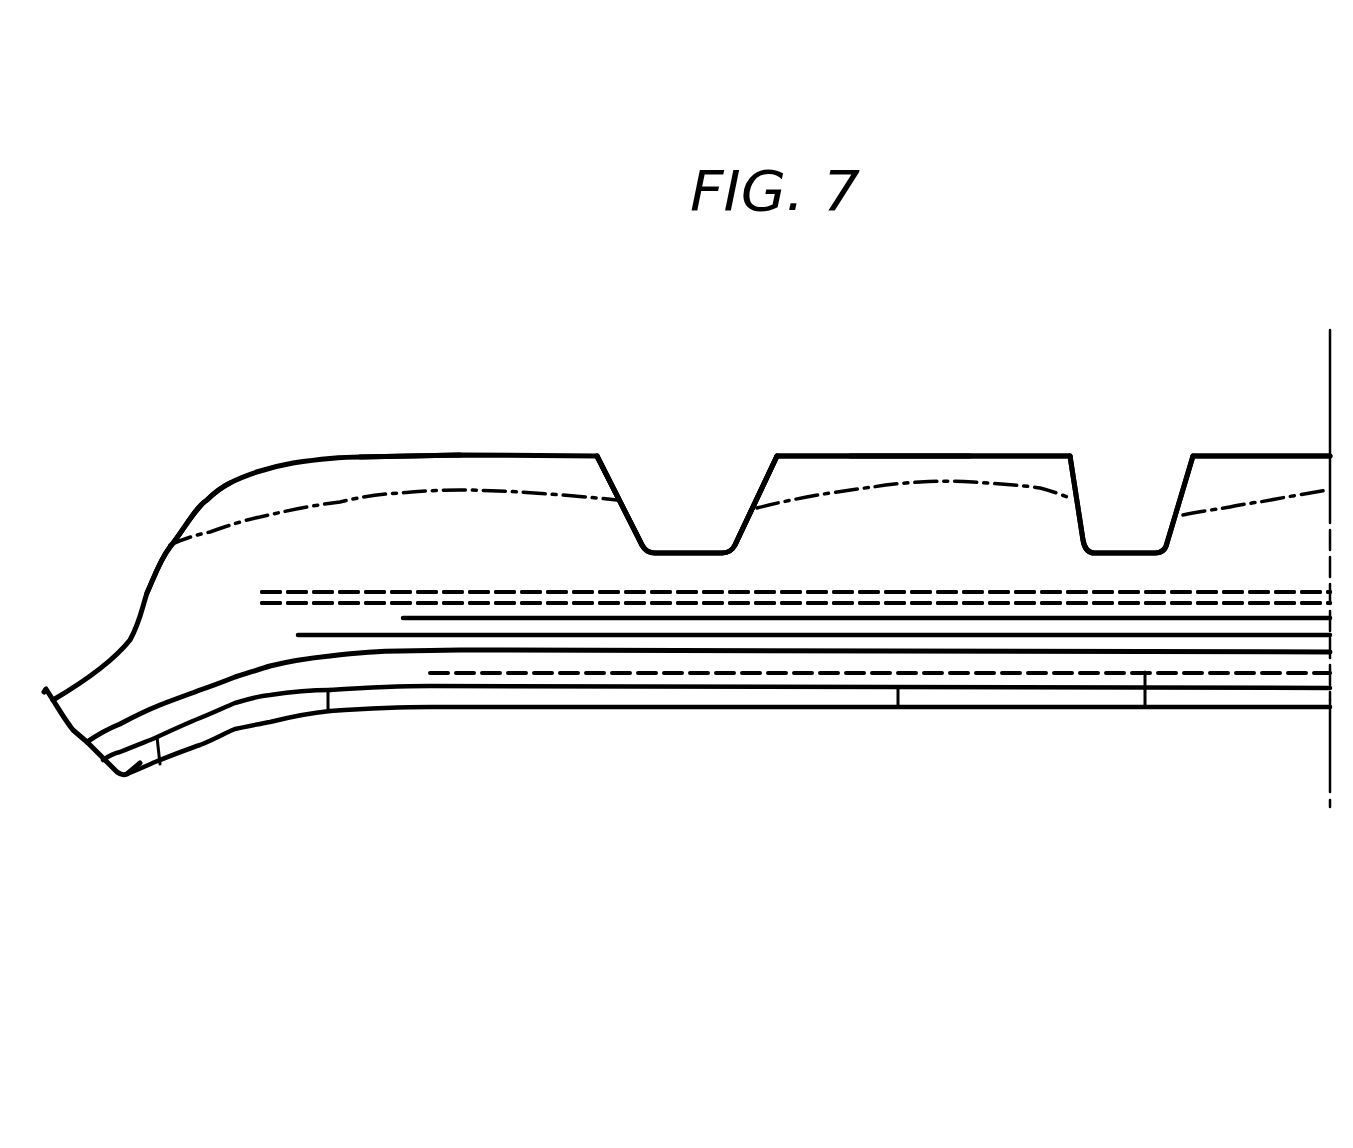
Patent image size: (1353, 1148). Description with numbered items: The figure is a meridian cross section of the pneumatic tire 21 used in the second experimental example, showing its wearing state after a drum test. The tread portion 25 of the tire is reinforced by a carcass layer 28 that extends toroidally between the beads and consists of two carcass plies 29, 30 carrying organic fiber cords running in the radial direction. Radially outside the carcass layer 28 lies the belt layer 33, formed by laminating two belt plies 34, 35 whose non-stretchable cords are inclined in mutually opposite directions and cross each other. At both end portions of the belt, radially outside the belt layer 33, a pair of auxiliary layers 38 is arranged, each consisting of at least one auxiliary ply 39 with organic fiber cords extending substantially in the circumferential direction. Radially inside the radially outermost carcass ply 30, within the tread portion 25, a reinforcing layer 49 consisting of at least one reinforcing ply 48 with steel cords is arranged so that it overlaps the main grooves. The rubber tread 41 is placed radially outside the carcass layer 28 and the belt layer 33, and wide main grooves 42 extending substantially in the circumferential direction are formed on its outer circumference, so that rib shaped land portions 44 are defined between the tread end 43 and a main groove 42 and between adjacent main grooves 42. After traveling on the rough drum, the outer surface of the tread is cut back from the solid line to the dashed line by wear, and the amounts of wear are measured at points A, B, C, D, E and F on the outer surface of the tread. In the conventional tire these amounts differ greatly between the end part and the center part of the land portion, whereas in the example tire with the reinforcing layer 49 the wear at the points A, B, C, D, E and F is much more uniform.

The pneumatic tire 21 is at (1090, 398).
The tread portion 25 is at (968, 448).
The carcass layer 28 is at (160, 765).
The carcass ply 29 is at (330, 710).
The carcass ply 30 is at (233, 677).
The belt layer 33 is at (522, 606).
The belt ply 34 is at (585, 635).
The belt ply 35 is at (1210, 617).
The auxiliary layer 38 is at (816, 582).
The auxiliary ply 39 is at (917, 594).
The tread 41 is at (495, 523).
The main groove 42 is at (630, 527).
The tread end 43 is at (212, 486).
The land portion 44 is at (833, 507).
The reinforcing ply 48 is at (1147, 710).
The reinforcing layer 49 is at (896, 715).
The measurement point A is at (1283, 456).
The measurement point B is at (1193, 456).
The measurement point C is at (893, 456).
The measurement point D is at (777, 456).
The measurement point E is at (598, 456).
The measurement point F is at (410, 456).